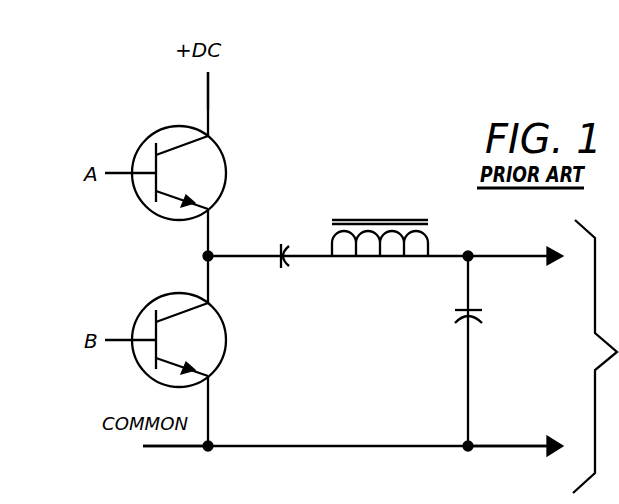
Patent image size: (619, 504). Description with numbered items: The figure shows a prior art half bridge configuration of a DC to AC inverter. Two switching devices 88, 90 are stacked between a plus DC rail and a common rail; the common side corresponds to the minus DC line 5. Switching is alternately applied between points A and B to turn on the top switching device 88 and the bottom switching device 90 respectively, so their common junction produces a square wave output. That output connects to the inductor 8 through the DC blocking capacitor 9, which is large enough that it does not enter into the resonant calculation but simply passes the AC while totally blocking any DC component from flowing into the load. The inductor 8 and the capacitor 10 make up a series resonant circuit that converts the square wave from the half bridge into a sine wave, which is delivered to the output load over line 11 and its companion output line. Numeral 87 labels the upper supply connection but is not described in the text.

The line 5 is at (182, 446).
The inductor 8 is at (378, 220).
The blocking capacitor 9 is at (282, 243).
The capacitor 10 is at (458, 323).
The line 11 is at (515, 447).
The DC supply rail 87 is at (208, 100).
The switching device 88 is at (223, 158).
The switching device 90 is at (223, 362).